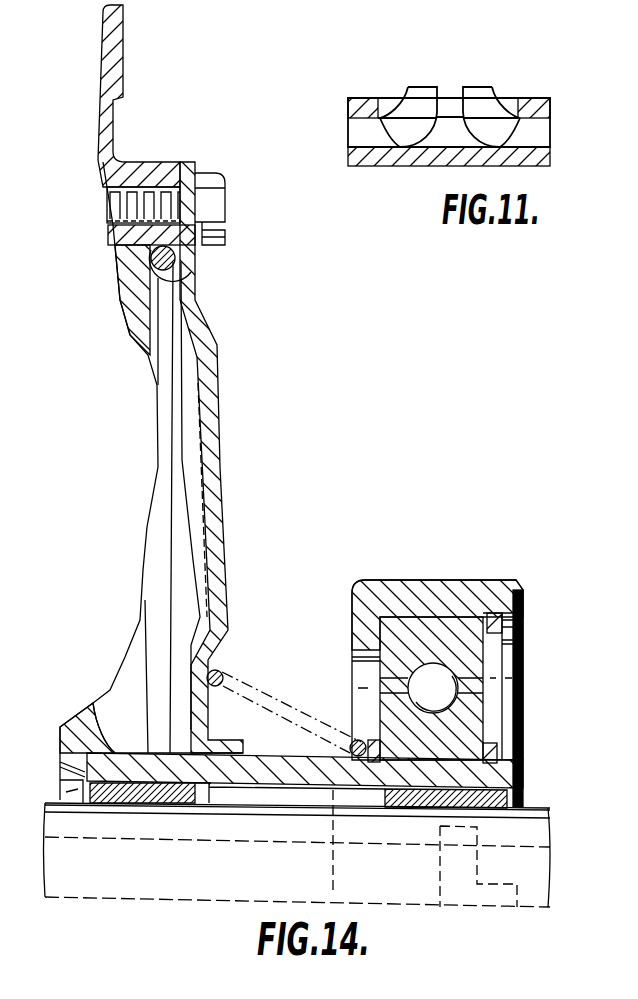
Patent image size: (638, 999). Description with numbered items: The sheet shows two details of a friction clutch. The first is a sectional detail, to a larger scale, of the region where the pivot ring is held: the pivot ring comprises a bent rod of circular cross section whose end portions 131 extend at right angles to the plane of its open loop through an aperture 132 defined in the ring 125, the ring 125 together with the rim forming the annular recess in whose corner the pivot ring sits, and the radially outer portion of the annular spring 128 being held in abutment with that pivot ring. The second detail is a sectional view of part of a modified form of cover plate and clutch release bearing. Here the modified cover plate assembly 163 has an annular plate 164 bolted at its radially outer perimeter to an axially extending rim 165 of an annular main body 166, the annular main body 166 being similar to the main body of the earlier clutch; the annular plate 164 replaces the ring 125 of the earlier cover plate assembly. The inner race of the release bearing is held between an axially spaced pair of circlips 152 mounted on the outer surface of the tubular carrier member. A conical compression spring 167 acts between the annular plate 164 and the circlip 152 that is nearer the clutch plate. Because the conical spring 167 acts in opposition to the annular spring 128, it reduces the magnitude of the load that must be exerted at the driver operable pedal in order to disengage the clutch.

In FIG. 11, the ring 125 is at (532, 108).
In FIG. 11, the annular spring 128 is at (418, 166).
In FIG. 11, the end portions 131 is at (472, 94).
In FIG. 11, the aperture 132 is at (383, 113).
In FIG. 14, the circlips 152 is at (373, 740).
In FIG. 14, the cover plate assembly 163 is at (226, 371).
In FIG. 14, the annular plate 164 is at (210, 437).
In FIG. 14, the rim 165 is at (168, 162).
In FIG. 14, the annular main body 166 is at (134, 53).
In FIG. 14, the conical compression spring 167 is at (272, 706).